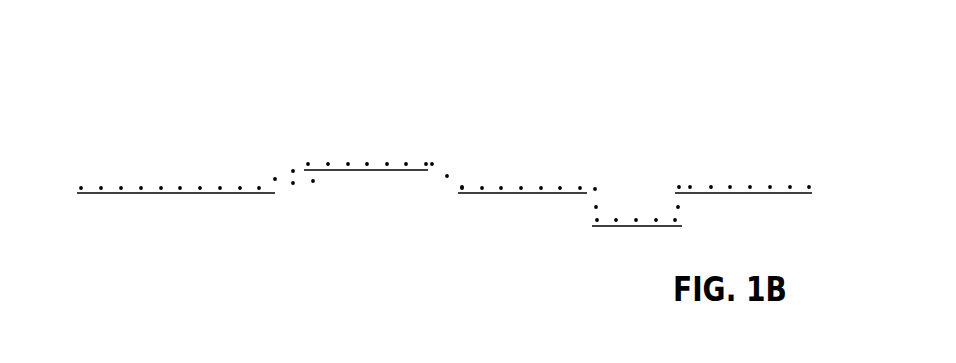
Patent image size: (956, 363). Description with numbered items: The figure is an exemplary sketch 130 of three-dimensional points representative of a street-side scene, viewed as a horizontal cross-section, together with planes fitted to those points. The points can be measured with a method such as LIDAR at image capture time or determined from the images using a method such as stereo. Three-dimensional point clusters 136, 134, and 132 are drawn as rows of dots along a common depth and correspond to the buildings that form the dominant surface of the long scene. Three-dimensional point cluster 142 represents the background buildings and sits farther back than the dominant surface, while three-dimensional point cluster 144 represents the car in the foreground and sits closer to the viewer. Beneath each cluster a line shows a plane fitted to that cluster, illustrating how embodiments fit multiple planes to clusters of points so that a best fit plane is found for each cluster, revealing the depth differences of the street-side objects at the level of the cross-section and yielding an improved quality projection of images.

The sketch 130 is at (787, 73).
The three-dimensional point cluster 132 is at (789, 187).
The three-dimensional point cluster 134 is at (581, 188).
The three-dimensional point cluster 136 is at (221, 189).
The three-dimensional point cluster 142 is at (407, 163).
The three-dimensional point cluster 144 is at (596, 219).